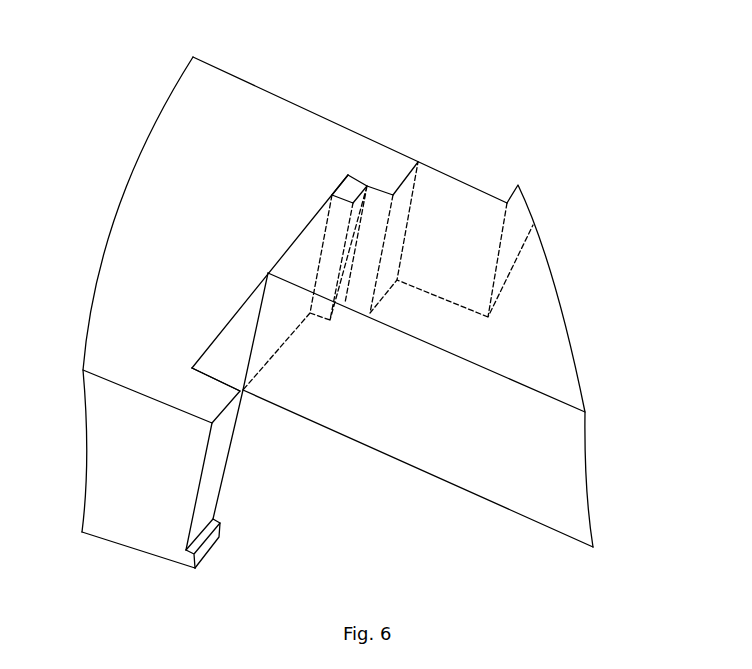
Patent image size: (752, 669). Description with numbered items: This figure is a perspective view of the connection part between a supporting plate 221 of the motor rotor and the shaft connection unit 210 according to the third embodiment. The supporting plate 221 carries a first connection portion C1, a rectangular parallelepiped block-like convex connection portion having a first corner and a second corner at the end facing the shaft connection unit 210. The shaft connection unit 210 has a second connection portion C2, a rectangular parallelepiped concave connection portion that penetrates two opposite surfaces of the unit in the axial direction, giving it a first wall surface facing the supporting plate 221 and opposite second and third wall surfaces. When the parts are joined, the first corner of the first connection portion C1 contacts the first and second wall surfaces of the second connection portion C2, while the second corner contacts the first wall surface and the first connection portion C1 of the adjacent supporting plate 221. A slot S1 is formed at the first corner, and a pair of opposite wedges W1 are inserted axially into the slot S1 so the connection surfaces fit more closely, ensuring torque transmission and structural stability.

The shaft connection unit 210 is at (178, 223).
The supporting plate 221 is at (557, 373).
The first connection portion C1 is at (302, 253).
The second connection portion C2 is at (220, 360).
The slot S1 is at (358, 180).
The wedge W1 is at (370, 314).